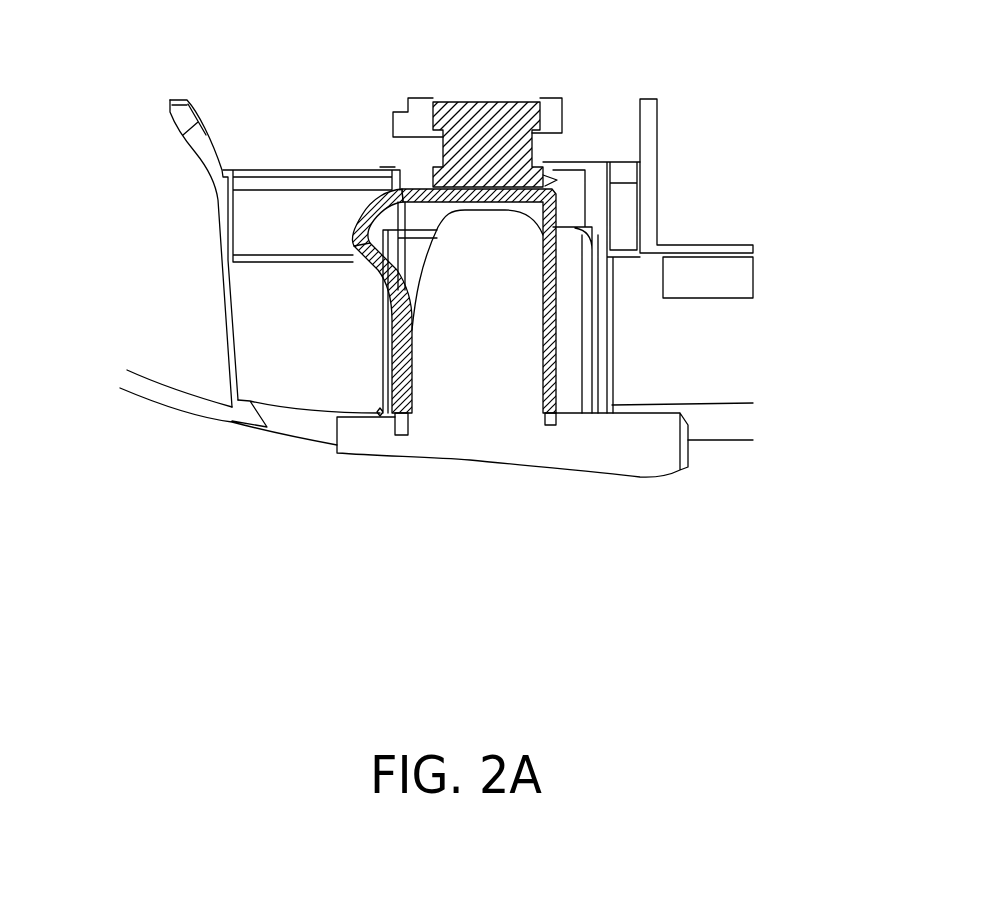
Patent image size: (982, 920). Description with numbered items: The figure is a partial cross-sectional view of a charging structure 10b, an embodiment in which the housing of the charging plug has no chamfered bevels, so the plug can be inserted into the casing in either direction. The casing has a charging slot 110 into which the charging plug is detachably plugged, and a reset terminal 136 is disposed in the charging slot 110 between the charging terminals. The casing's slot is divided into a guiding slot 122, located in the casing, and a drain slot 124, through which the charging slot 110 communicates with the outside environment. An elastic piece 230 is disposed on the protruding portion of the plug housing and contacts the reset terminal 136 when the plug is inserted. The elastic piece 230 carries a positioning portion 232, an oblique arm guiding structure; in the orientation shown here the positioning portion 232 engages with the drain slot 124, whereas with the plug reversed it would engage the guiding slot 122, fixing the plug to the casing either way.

The charging structure 10b is at (822, 597).
The charging slot 110 is at (394, 343).
The guiding slot 122 is at (623, 252).
The drain slot 124 is at (306, 203).
The reset terminal 136 is at (485, 122).
The elastic piece 230 is at (543, 362).
The positioning portion 232 is at (352, 243).